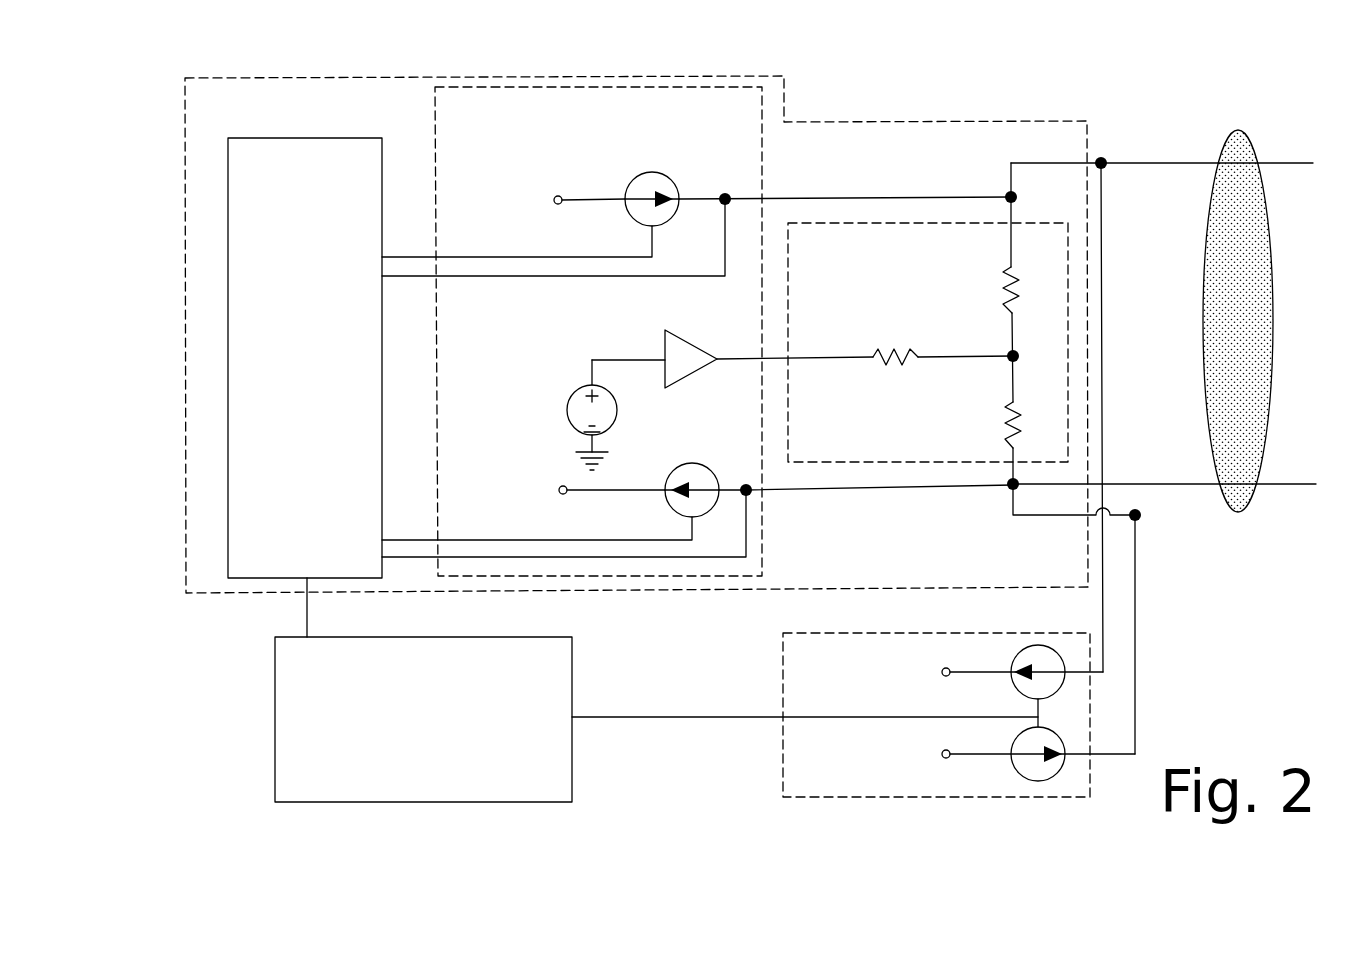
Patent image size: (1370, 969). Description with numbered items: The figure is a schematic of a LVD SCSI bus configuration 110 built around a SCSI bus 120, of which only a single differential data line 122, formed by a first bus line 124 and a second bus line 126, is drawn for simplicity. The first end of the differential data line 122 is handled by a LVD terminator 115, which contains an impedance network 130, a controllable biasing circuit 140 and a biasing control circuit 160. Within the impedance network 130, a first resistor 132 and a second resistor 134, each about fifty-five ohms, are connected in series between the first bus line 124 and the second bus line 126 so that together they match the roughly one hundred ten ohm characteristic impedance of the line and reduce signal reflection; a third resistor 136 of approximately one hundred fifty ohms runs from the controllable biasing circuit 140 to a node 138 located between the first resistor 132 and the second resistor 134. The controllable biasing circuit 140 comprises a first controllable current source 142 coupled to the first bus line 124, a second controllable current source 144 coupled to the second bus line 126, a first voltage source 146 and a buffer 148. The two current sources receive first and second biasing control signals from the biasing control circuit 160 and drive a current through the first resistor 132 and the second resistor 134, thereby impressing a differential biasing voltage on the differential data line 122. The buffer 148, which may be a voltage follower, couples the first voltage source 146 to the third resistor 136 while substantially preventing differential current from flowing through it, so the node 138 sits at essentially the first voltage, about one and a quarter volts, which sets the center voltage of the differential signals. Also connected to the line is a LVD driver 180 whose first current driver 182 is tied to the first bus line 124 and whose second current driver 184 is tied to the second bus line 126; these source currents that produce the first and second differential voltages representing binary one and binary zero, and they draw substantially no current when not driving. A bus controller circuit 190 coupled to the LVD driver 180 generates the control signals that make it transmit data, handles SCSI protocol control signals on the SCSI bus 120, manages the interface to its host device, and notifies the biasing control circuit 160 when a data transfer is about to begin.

The LVD SCSI bus configuration 110 is at (750, 439).
The LVD terminator 115 is at (1030, 122).
The SCSI bus 120 is at (1255, 365).
The differential data line 122 is at (1238, 131).
The first bus line 124 is at (1165, 162).
The second bus line 126 is at (1165, 484).
The impedance network 130 is at (1030, 223).
The first resistor 132 is at (1025, 288).
The second resistor 134 is at (1026, 432).
The third resistor 136 is at (877, 355).
The node 138 is at (1016, 356).
The controllable biasing circuit 140 is at (763, 556).
The first controllable current source 142 is at (662, 174).
The second controllable current source 144 is at (698, 465).
The first voltage source 146 is at (567, 405).
The buffer 148 is at (688, 334).
The biasing control circuit 160 is at (383, 475).
The LVD driver 180 is at (783, 672).
The first current driver 182 is at (1015, 667).
The second current driver 184 is at (1015, 762).
The bus controller circuit 190 is at (572, 690).